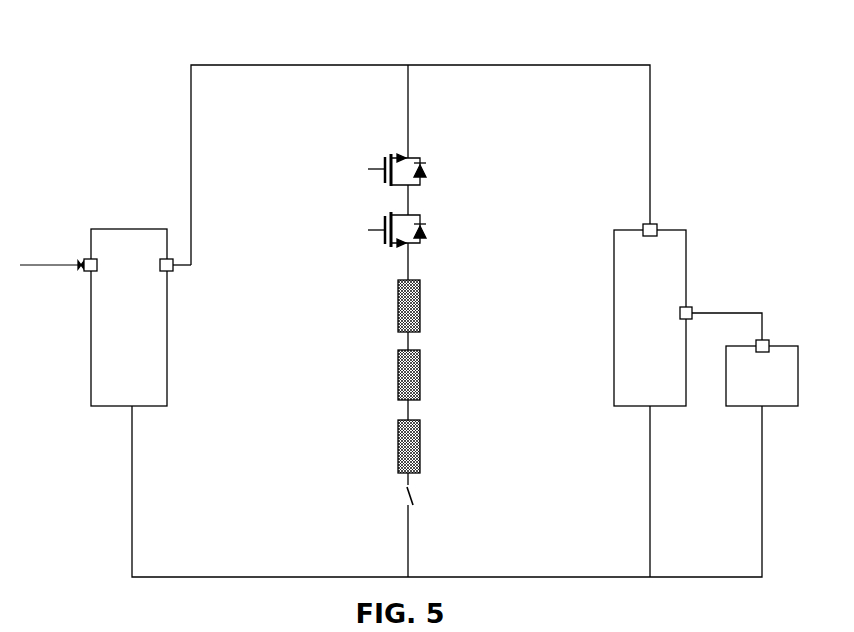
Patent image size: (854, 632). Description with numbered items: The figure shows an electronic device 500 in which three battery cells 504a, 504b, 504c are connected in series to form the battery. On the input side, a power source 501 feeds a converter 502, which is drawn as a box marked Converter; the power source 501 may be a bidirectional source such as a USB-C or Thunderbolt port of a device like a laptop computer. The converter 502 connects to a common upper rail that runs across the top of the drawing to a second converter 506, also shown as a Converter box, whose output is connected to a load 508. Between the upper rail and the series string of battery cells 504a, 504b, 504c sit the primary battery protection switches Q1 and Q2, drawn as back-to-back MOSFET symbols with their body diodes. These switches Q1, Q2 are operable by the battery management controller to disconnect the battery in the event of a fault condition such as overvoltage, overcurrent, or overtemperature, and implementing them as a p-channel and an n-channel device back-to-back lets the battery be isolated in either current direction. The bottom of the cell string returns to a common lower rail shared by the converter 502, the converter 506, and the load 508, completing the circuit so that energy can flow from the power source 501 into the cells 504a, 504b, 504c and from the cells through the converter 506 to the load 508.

The electronic device 500 is at (145, 68).
The power source 501 is at (52, 253).
The converter 502 is at (133, 229).
The primary battery protection switch Q1 is at (379, 184).
The primary battery protection switch Q2 is at (379, 246).
The battery cell 504a is at (420, 293).
The battery cell 504b is at (420, 363).
The battery cell 504c is at (420, 433).
The converter 506 is at (674, 230).
The load 508 is at (782, 346).